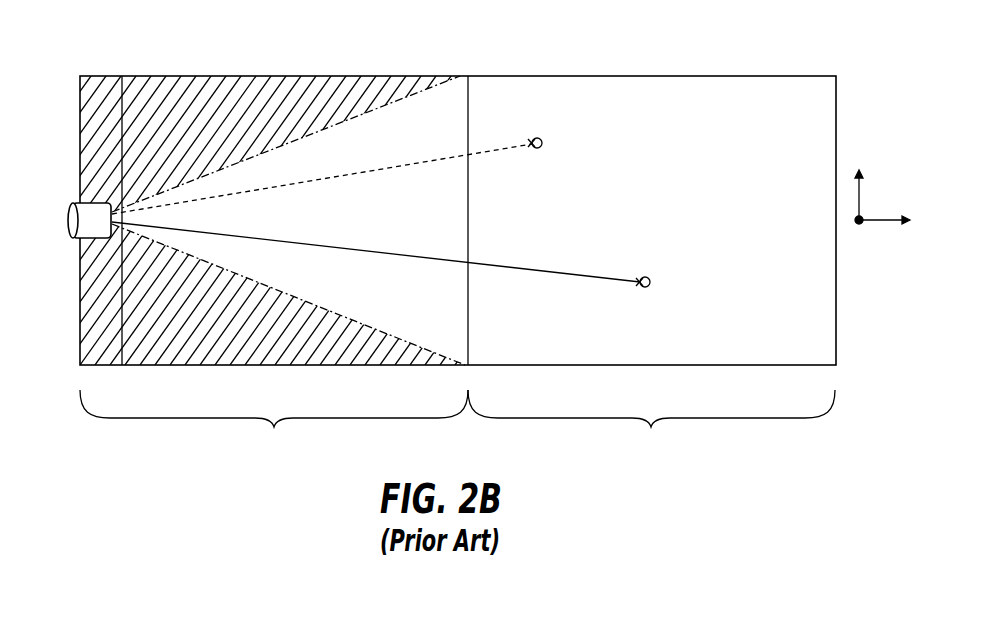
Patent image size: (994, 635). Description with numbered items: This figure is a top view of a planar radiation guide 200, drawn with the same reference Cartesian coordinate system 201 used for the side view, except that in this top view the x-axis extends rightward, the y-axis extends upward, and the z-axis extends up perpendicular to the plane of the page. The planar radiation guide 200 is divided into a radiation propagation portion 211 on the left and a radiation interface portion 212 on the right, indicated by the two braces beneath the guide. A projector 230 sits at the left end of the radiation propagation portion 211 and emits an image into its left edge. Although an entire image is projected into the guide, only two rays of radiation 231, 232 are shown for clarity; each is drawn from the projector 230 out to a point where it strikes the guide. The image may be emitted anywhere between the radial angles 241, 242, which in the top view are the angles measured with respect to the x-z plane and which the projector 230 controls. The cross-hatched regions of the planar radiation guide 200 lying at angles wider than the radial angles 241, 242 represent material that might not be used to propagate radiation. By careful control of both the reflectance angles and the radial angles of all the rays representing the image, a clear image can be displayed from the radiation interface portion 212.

The planar radiation guide 200 is at (58, 293).
The reference Cartesian coordinate system 201 is at (878, 222).
The radiation propagation portion 211 is at (274, 424).
The radiation interface portion 212 is at (651, 424).
The projector 230 is at (92, 203).
The ray of radiation 231 is at (352, 176).
The ray of radiation 232 is at (348, 258).
The radial angle 241 is at (250, 158).
The radial angle 242 is at (240, 292).